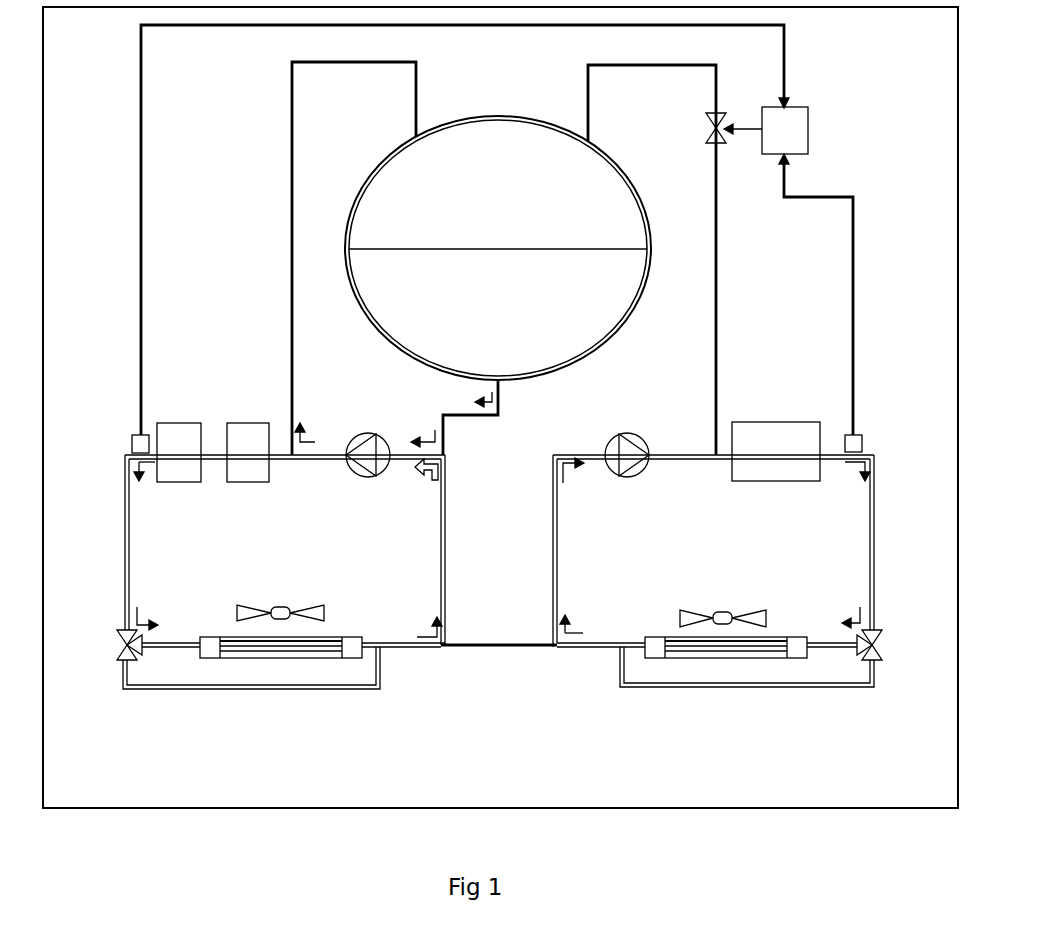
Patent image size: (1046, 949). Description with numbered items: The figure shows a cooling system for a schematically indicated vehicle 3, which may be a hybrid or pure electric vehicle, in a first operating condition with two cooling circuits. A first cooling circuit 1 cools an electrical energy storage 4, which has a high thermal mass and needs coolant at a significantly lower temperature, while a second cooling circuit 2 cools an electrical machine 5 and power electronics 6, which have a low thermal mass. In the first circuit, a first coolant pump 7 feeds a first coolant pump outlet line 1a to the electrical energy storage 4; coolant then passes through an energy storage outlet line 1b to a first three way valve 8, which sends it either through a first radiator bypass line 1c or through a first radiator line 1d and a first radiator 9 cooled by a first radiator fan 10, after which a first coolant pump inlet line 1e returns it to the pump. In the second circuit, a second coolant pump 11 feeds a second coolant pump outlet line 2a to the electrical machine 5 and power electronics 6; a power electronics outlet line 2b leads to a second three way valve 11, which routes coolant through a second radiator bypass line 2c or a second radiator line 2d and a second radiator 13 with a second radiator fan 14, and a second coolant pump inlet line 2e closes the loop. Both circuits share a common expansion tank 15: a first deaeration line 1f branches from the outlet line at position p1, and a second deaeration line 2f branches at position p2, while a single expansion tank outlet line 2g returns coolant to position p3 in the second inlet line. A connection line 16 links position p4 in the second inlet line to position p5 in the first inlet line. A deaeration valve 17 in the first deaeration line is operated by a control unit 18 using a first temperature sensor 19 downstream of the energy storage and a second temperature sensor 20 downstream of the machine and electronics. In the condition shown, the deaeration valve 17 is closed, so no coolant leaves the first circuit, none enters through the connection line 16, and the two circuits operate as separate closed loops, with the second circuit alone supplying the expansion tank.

The first cooling circuit 1 is at (794, 389).
The first coolant pump outlet line 1a is at (693, 452).
The energy storage outlet line 1b is at (876, 565).
The first radiator bypass line 1c is at (742, 687).
The first radiator line 1d is at (632, 642).
The first coolant pump inlet line 1e is at (557, 572).
The first deaeration line 1f is at (719, 297).
The second cooling circuit 2 is at (206, 389).
The second coolant pump outlet line 2a is at (333, 452).
The power electronics outlet line 2b is at (123, 577).
The second radiator bypass line 2c is at (170, 689).
The second radiator line 2d is at (173, 640).
The second coolant pump inlet line 2e is at (443, 572).
The second deaeration line 2f is at (290, 293).
The expansion tank outlet line 2g is at (503, 395).
The vehicle 3 is at (102, 87).
The electrical energy storage 4 is at (768, 462).
The electrical machine 5 is at (250, 467).
The power electronics 6 is at (180, 467).
The first coolant pump 7 is at (625, 459).
The first three way valve 8 is at (878, 645).
The first radiator 9 is at (697, 646).
The first radiator fan 10 is at (727, 612).
The second coolant pump / second three way valve 11 is at (360, 459).
The second radiator 13 is at (280, 648).
The second radiator fan 14 is at (277, 607).
The expansion tank 15 is at (384, 157).
The connection line 16 is at (507, 647).
The deaeration valve 17 is at (718, 118).
The control unit 18 is at (785, 135).
The first temperature sensor 19 is at (862, 437).
The second temperature sensor 20 is at (132, 440).
The position p1 is at (716, 458).
The position p2 is at (292, 458).
The position p3 is at (447, 456).
The position p4 is at (448, 642).
The position p5 is at (555, 647).